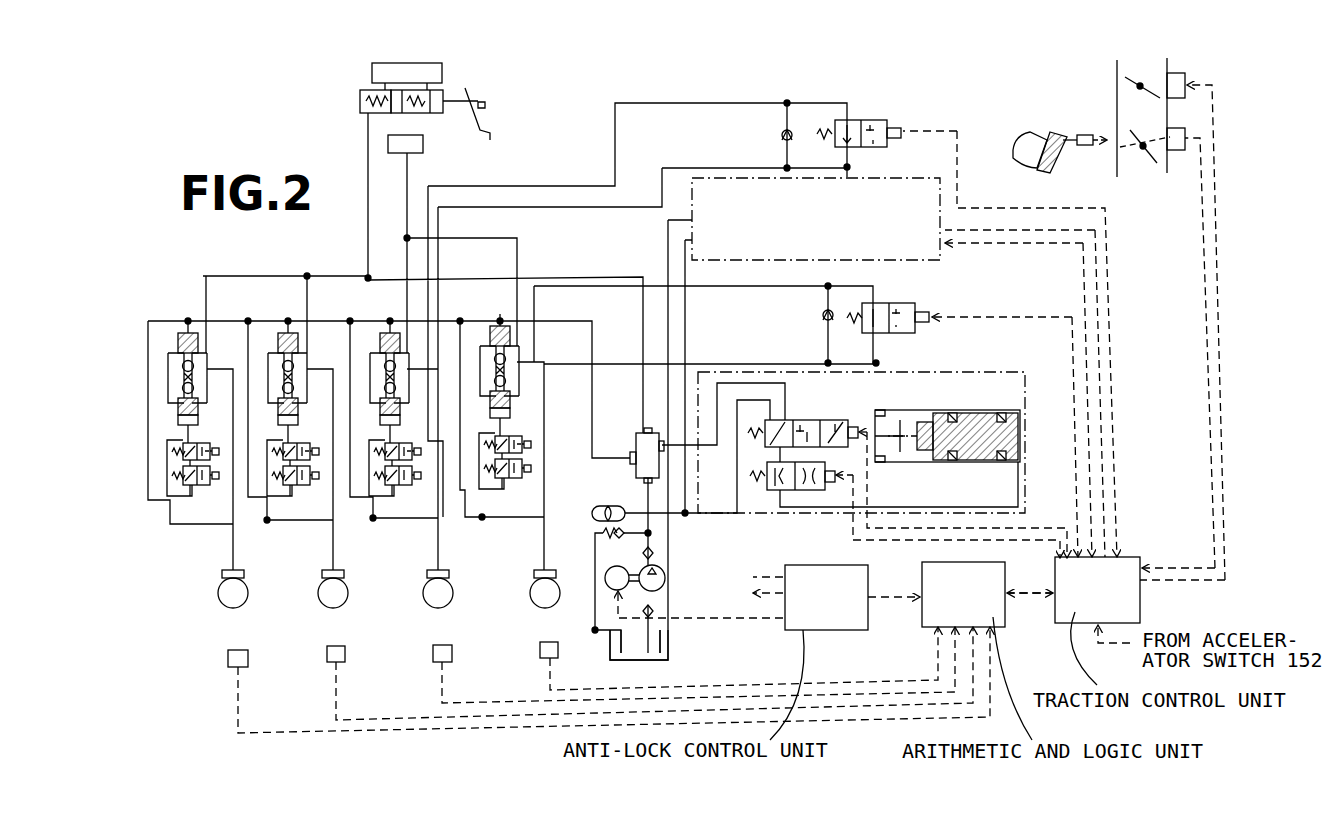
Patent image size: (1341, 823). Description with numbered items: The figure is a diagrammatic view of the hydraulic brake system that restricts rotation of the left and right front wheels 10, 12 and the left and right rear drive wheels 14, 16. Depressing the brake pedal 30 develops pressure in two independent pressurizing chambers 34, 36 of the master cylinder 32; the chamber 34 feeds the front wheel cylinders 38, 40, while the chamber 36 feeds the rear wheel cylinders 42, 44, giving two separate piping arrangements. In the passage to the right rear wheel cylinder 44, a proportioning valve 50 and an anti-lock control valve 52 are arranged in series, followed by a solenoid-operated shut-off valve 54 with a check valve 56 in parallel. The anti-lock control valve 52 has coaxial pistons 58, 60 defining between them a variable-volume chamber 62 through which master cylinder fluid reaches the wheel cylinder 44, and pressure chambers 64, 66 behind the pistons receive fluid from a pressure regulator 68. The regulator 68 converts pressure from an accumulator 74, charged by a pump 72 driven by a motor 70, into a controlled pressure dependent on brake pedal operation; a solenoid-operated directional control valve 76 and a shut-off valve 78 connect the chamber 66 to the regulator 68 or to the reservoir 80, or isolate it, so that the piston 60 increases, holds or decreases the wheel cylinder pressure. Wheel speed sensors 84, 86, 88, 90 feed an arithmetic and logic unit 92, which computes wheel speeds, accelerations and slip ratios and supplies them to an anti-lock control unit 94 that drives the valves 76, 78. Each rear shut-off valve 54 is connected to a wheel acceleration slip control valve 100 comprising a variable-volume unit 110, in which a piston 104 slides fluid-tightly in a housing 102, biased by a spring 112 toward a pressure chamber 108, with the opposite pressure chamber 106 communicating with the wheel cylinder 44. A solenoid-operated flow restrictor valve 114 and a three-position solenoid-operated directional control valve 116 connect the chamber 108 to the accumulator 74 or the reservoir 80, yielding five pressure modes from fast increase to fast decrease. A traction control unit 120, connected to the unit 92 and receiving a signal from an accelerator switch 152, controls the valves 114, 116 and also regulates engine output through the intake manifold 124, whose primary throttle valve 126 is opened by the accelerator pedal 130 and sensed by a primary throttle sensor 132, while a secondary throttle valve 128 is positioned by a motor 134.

The left front wheel 10 is at (226, 604).
The right front wheel 12 is at (328, 604).
The left rear drive wheel 14 is at (432, 604).
The right rear drive wheel 16 is at (538, 604).
The brake pedal 30 is at (483, 102).
The master cylinder 32 is at (442, 93).
The pressurizing chamber 34 is at (360, 108).
The pressurizing chamber 36 is at (420, 113).
The front wheel cylinder 38 is at (222, 575).
The front wheel cylinder 40 is at (322, 575).
The rear wheel cylinder 42 is at (427, 575).
The rear wheel cylinder 44 is at (534, 575).
The proportioning valve 50 is at (423, 147).
The anti-lock control valve 52 is at (365, 421).
The solenoid-operated shut-off valve 54 is at (848, 120).
The check valve 56 is at (782, 133).
The piston 58 is at (490, 327).
The piston 60 is at (510, 400).
The variable-volume chamber 62 is at (507, 385).
The pressure chamber 64 is at (510, 334).
The pressure chamber 66 is at (510, 414).
The pressure regulator 68 is at (636, 450).
The motor 70 is at (606, 589).
The pump 72 is at (660, 578).
The accumulator 74 is at (601, 507).
The solenoid-operated directional control valve 76 is at (207, 443).
The solenoid-operated shut-off valve 78 is at (205, 485).
The reservoir 80 is at (676, 647).
The wheel speed sensor 84 is at (228, 662).
The wheel speed sensor 86 is at (327, 662).
The wheel speed sensor 88 is at (433, 657).
The wheel speed sensor 90 is at (540, 650).
The arithmetic and logic unit 92 is at (1000, 622).
The anti-lock control unit 94 is at (855, 627).
The wheel acceleration slip control valve 100 is at (930, 258).
The housing 102 is at (912, 400).
The piston 104 is at (980, 415).
The pressure chamber 106 is at (892, 450).
The pressure chamber 108 is at (1020, 455).
The variable-volume unit 110 is at (884, 445).
The spring 112 is at (927, 458).
The solenoid-operated flow restrictor valve 114 is at (775, 492).
The solenoid-operated directional control valve 116 is at (818, 406).
The traction control unit 120 is at (1140, 610).
The intake manifold 124 is at (1117, 175).
The primary throttle valve 126 is at (1147, 158).
The secondary throttle valve 128 is at (1137, 84).
The accelerator pedal 130 is at (1050, 130).
The primary throttle sensor 132 is at (1178, 150).
The motor 134 is at (1176, 73).
The accelerator switch 152 is at (1085, 135).